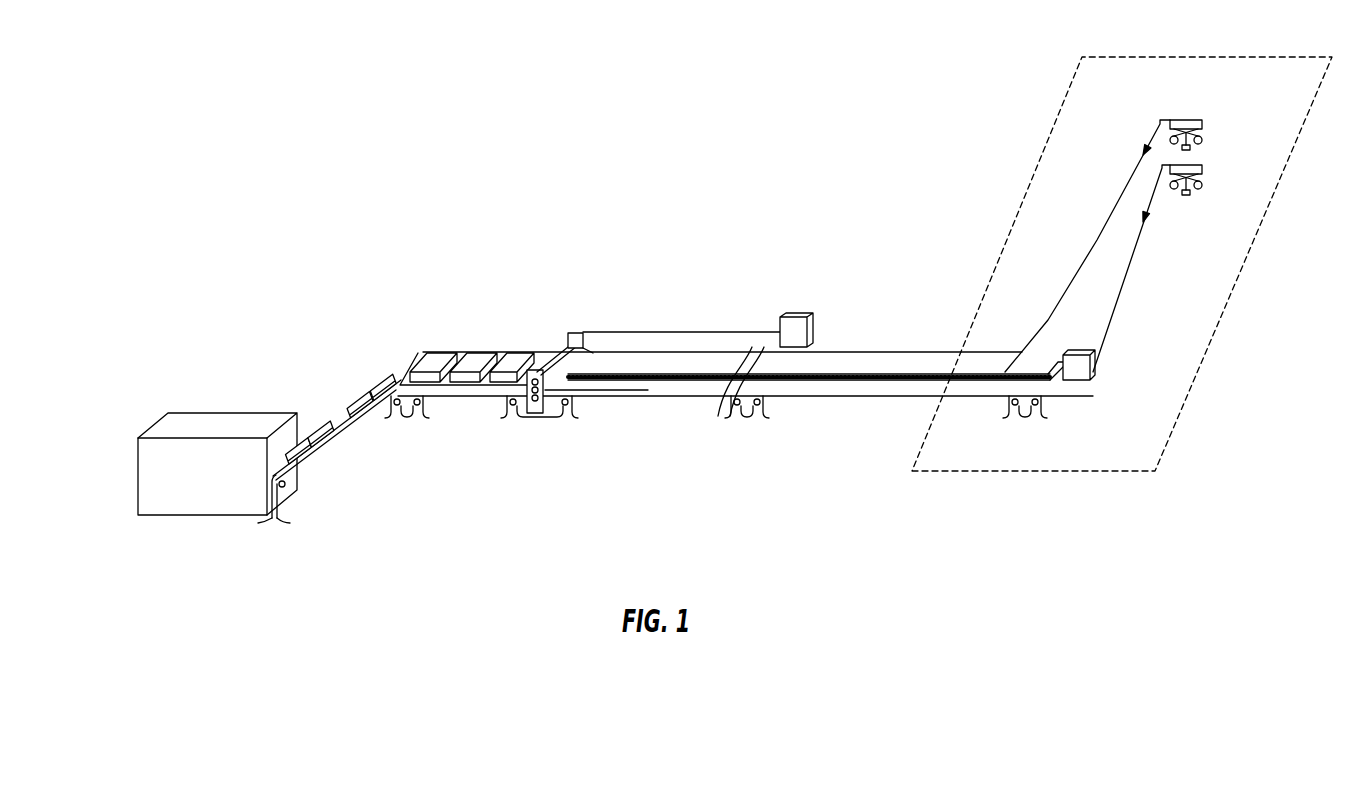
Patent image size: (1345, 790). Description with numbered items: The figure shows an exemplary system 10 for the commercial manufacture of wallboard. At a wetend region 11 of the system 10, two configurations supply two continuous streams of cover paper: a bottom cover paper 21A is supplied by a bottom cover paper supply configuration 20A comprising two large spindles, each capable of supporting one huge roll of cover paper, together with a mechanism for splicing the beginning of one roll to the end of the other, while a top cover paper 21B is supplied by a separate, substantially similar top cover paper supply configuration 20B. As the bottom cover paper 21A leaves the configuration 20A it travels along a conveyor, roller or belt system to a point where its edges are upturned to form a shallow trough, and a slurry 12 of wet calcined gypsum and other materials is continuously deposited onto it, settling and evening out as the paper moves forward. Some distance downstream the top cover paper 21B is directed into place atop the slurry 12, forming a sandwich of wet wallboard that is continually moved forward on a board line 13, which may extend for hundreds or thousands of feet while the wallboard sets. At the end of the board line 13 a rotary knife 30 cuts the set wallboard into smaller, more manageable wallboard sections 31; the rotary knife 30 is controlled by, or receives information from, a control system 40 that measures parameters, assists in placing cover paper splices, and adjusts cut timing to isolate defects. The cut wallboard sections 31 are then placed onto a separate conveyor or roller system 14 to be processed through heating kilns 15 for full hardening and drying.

The system 10 is at (514, 164).
The wetend region 11 is at (1022, 471).
The slurry 12 is at (1036, 372).
The board line 13 is at (891, 351).
The conveyor or roller system 14 is at (344, 441).
The heating kilns 15 is at (145, 488).
The bottom cover paper supply configuration 20A is at (1200, 186).
The top cover paper supply configuration 20B is at (1200, 119).
The bottom cover paper 21A is at (1115, 310).
The top cover paper 21B is at (1095, 243).
The rotary knife 30 is at (574, 333).
The wallboard sections 31 is at (363, 399).
The control system 40 is at (790, 316).